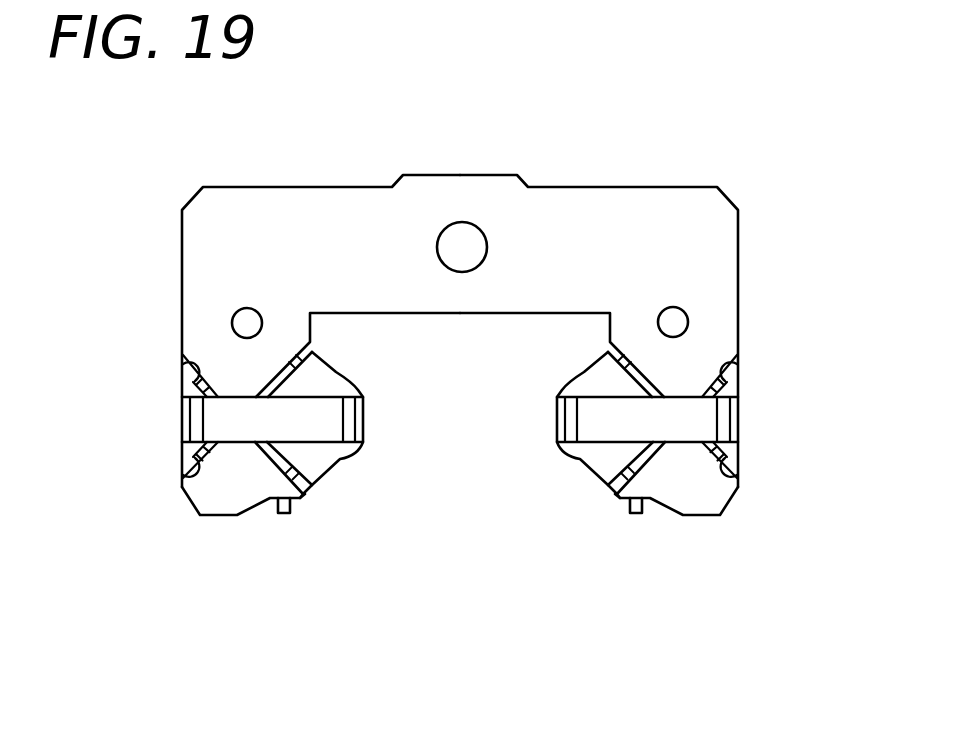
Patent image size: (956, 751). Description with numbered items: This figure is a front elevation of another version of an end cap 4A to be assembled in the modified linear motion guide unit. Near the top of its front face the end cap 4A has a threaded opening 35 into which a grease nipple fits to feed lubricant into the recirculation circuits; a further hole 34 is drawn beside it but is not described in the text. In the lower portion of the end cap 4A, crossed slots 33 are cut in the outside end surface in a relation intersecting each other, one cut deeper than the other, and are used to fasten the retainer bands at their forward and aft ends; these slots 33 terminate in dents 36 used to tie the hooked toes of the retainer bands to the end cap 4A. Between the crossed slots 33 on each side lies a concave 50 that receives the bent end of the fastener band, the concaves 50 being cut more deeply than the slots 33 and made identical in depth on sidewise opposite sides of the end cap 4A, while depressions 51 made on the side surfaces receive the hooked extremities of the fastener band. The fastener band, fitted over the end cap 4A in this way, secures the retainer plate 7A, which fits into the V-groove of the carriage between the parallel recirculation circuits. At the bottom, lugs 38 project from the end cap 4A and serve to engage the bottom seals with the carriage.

The end cap 4A is at (583, 185).
The threaded opening 35 is at (458, 244).
The hole 34 is at (676, 320).
The slots 33 is at (272, 375).
The retainer plate 7A is at (318, 462).
The concaves 50 is at (245, 418).
The depressions 51 is at (185, 407).
The dents 36 is at (190, 470).
The lugs 38 is at (291, 511).